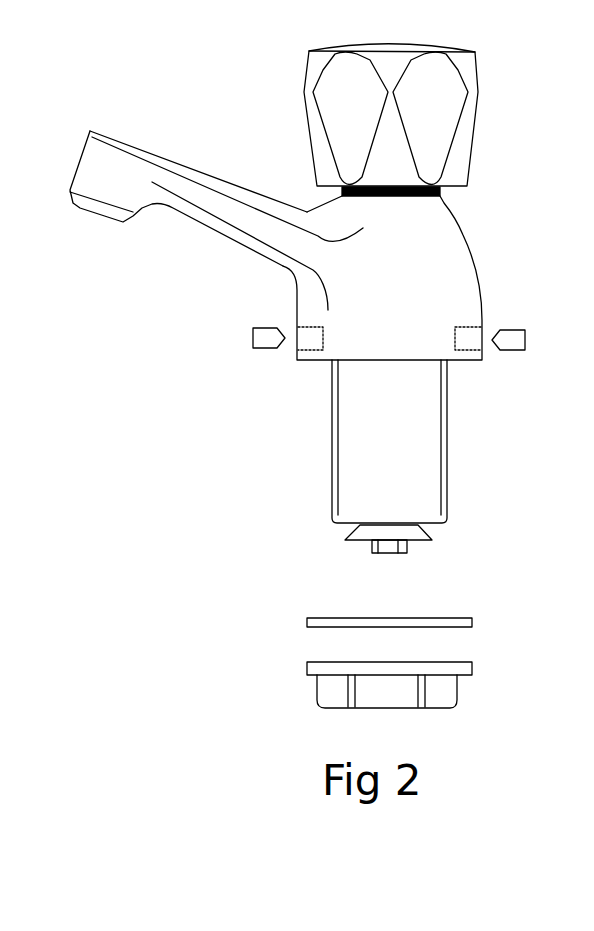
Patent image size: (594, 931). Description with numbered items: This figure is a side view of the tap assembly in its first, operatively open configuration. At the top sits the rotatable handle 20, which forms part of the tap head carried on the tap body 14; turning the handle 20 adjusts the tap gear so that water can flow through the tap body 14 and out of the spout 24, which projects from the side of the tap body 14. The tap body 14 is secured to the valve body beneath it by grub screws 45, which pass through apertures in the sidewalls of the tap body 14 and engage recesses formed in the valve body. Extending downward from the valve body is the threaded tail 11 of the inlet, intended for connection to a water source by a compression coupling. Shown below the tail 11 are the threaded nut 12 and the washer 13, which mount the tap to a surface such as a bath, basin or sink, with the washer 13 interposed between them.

The rotatable handle 20 is at (440, 113).
The tap body 14 is at (472, 248).
The spout 24 is at (122, 183).
The grub screws 45 is at (277, 332).
The threaded tail 11 is at (420, 456).
The washer 13 is at (472, 623).
The threaded nut 12 is at (430, 695).